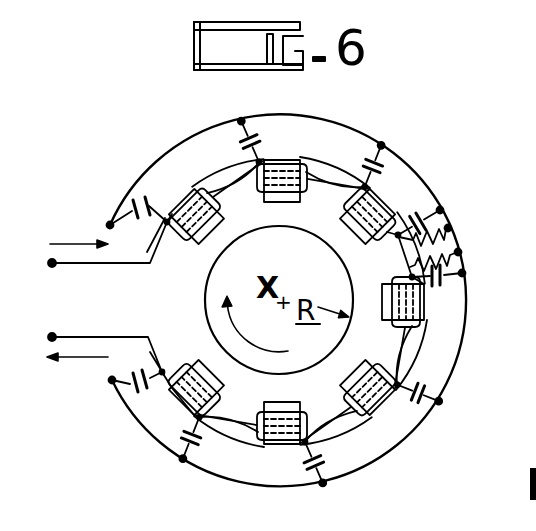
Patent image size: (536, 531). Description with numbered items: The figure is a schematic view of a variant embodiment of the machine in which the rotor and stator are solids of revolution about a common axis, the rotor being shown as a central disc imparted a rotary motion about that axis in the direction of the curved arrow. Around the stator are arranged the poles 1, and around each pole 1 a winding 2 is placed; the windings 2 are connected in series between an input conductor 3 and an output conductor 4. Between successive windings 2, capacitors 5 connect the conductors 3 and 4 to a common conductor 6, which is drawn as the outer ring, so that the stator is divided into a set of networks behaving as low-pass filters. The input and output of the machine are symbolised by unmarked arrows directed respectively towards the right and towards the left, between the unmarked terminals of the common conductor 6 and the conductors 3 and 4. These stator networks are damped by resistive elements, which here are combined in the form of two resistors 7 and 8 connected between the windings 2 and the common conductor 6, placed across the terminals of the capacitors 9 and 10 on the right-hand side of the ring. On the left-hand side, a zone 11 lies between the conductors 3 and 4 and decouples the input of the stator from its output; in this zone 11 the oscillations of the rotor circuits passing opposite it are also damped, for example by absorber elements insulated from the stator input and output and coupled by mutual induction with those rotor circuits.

The pole 1 is at (226, 212).
The winding 2 is at (186, 196).
The input conductor 3 is at (112, 266).
The output conductor 4 is at (116, 337).
The capacitor 5 is at (268, 112).
The common conductor 6 is at (355, 97).
The resistor 7 is at (452, 228).
The resistor 8 is at (461, 262).
The capacitor 9 is at (428, 190).
The capacitor 10 is at (467, 290).
The zone 11 is at (54, 301).